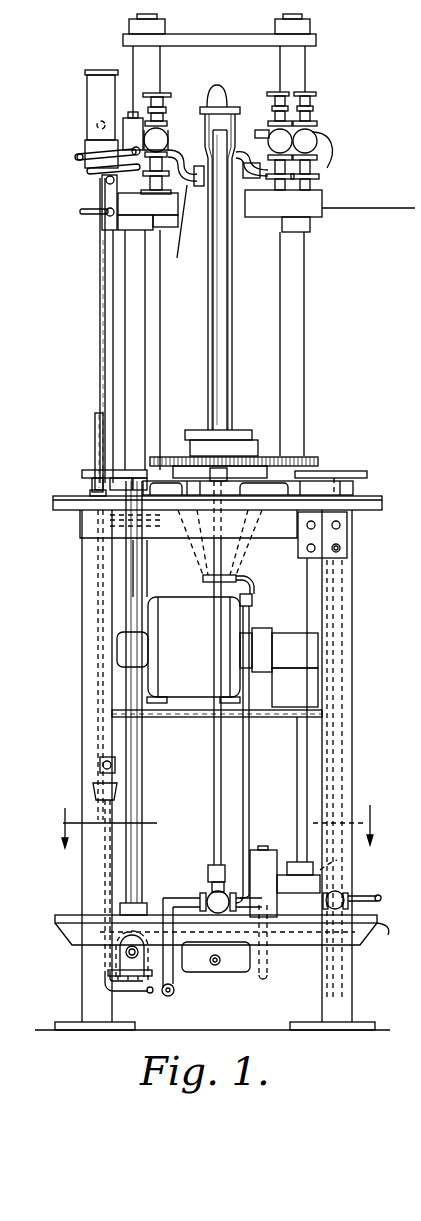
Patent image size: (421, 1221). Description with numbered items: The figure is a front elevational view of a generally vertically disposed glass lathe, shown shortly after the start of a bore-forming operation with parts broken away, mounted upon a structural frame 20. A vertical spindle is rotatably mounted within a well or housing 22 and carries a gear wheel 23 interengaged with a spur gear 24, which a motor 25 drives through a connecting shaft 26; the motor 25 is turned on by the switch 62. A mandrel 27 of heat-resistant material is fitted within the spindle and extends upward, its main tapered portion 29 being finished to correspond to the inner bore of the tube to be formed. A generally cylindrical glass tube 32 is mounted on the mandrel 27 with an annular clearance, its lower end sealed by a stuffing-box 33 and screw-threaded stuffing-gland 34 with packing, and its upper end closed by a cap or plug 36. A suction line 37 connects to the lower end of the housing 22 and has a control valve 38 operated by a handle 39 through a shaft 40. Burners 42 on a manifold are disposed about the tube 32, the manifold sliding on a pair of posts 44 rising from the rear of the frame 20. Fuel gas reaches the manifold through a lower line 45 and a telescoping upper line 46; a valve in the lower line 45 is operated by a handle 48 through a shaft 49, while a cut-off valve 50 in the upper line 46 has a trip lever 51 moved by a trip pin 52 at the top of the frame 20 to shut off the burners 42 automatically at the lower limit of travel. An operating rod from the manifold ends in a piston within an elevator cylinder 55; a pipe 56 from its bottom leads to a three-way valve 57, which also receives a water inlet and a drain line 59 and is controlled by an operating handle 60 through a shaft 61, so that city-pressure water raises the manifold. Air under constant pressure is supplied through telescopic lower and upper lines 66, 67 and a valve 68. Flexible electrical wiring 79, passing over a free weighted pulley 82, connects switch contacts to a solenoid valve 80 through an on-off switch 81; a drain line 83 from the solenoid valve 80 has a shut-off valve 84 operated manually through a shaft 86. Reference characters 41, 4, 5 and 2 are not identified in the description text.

The structural frame 20 is at (90, 642).
The well or housing 22 is at (233, 553).
The gear wheel 23 is at (258, 455).
The spur gear 24 is at (310, 452).
The motor 25 is at (217, 652).
The connecting shaft 26 is at (290, 590).
The mandrel 27 is at (217, 340).
The tapered portion 29 is at (228, 261).
The glass tube 32 is at (233, 308).
The stuffing-box 33 is at (260, 440).
The stuffing-gland 34 is at (190, 430).
The cap or plug 36 is at (224, 102).
The suction line 37 is at (250, 750).
The control valve 38 is at (223, 905).
The handle 39 is at (227, 470).
The shaft 40 is at (220, 790).
The bracket 41 is at (371, 209).
The burners 42 is at (303, 176).
The posts 44 is at (149, 60).
The lower line 45 is at (128, 553).
The upper line 46 is at (130, 375).
The handle 48 is at (85, 471).
The shaft 49 is at (133, 593).
The cut-off valve 50 is at (125, 145).
The trip lever 51 is at (80, 157).
The trip pin 52 is at (97, 417).
The elevator cylinder 55 is at (205, 827).
The pipe 56 is at (280, 927).
The three-way valve 57 is at (305, 887).
The drain line 59 is at (377, 933).
The operating handle 60 is at (353, 470).
The shaft 61 is at (290, 780).
The switch 62 is at (318, 513).
The lower line 66 is at (103, 867).
The upper line 67 is at (110, 263).
The valve 68 is at (106, 212).
The flexible electrical wiring 79 is at (100, 310).
The solenoid valve 80 is at (260, 860).
The on-off switch 81 is at (340, 548).
The weighted pulley 82 is at (100, 770).
The drain line 83 is at (365, 897).
The shut-off valve 84 is at (330, 960).
The shaft 86 is at (337, 860).
The section line 4- 4 is at (213, 816).
The section line 5 is at (415, 940).
The section line 2 is at (417, 593).